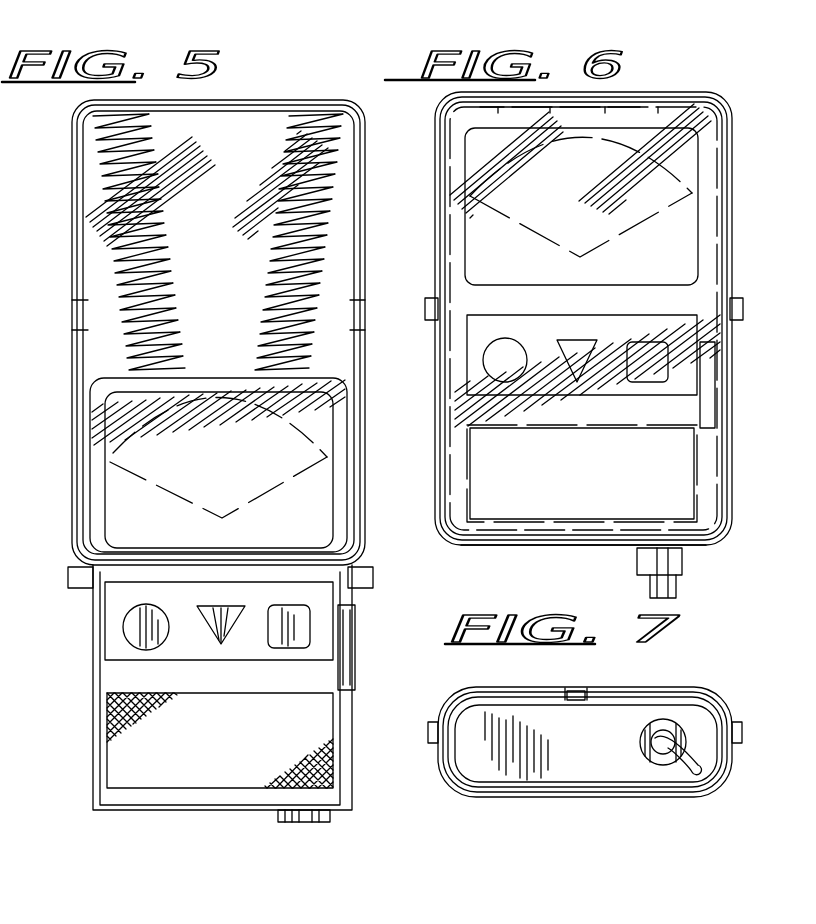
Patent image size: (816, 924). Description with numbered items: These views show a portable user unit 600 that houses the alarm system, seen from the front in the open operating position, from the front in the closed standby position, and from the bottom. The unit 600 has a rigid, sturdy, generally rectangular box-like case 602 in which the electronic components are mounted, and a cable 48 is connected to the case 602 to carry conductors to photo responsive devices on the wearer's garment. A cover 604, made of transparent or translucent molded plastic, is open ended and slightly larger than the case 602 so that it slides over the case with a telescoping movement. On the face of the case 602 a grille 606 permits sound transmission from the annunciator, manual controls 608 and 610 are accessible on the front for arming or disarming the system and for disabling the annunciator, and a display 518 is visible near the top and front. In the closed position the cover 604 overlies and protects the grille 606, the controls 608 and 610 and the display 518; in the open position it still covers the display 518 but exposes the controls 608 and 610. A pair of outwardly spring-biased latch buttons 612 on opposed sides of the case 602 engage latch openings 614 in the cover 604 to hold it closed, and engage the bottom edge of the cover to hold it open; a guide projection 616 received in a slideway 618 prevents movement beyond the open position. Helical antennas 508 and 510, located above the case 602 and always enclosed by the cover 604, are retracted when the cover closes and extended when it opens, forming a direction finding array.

In FIG. 5, the user unit 600 is at (40, 163).
In FIG. 6, the user unit 600 is at (412, 148).
In FIG. 5, the case 602 is at (120, 803).
In FIG. 6, the case 602 is at (515, 547).
In FIG. 7, the case 602 is at (600, 751).
In FIG. 5, the cover 604 is at (360, 218).
In FIG. 6, the cover 604 is at (733, 140).
In FIG. 7, the cover 604 is at (542, 788).
In FIG. 5, the grille 606 is at (137, 755).
In FIG. 6, the grille 606 is at (657, 500).
In FIG. 5, the manual control 608 is at (137, 630).
In FIG. 6, the manual control 608 is at (463, 367).
In FIG. 5, the manual control 610 is at (352, 640).
In FIG. 6, the manual control 610 is at (707, 415).
In FIG. 5, the latch buttons 612 is at (68, 577).
In FIG. 6, the latch buttons 612 is at (425, 307).
In FIG. 7, the latch buttons 612 is at (428, 725).
In FIG. 5, the latch openings 614 is at (72, 322).
In FIG. 7, the guide projection 616 is at (578, 690).
In FIG. 7, the slideway 618 is at (563, 688).
In FIG. 5, the antenna 508 is at (132, 327).
In FIG. 6, the antenna 508 is at (513, 107).
In FIG. 6, the antenna 510 is at (640, 106).
In FIG. 5, the display 518 is at (110, 463).
In FIG. 6, the display 518 is at (477, 492).
In FIG. 5, the cable 48 is at (325, 822).
In FIG. 6, the cable 48 is at (677, 593).
In FIG. 7, the cable 48 is at (677, 758).